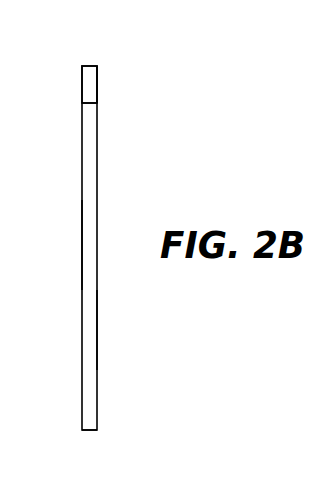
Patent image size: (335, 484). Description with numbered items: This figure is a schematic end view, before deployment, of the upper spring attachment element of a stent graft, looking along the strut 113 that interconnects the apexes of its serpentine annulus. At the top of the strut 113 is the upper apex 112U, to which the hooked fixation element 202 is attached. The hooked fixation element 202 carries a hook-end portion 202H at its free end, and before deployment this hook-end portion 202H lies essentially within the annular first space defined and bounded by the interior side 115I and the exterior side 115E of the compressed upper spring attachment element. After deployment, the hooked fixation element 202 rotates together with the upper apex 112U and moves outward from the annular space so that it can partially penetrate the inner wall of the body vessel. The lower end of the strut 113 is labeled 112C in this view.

The hooked fixation element 202 is at (87, 66).
The hook-end portion 202H is at (97, 90).
The upper apex 112U is at (84, 104).
The strut 113 is at (88, 183).
The interior side 115I is at (82, 252).
The exterior side 115E is at (97, 324).
The closed end of shaft 112C is at (88, 429).